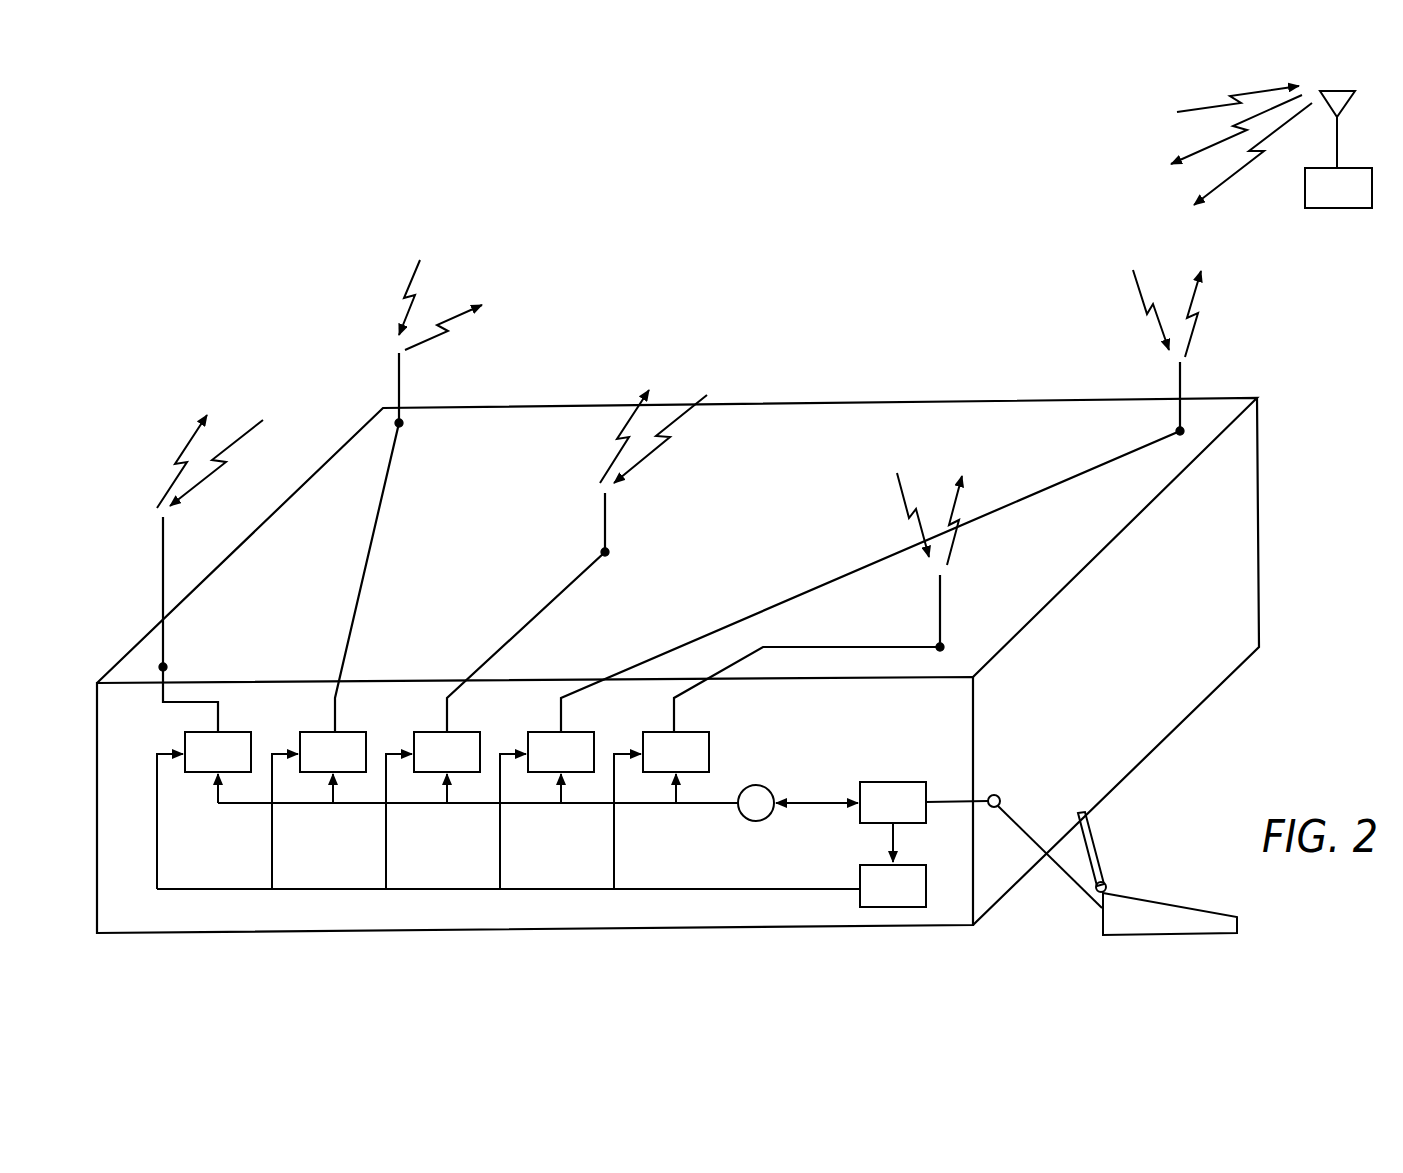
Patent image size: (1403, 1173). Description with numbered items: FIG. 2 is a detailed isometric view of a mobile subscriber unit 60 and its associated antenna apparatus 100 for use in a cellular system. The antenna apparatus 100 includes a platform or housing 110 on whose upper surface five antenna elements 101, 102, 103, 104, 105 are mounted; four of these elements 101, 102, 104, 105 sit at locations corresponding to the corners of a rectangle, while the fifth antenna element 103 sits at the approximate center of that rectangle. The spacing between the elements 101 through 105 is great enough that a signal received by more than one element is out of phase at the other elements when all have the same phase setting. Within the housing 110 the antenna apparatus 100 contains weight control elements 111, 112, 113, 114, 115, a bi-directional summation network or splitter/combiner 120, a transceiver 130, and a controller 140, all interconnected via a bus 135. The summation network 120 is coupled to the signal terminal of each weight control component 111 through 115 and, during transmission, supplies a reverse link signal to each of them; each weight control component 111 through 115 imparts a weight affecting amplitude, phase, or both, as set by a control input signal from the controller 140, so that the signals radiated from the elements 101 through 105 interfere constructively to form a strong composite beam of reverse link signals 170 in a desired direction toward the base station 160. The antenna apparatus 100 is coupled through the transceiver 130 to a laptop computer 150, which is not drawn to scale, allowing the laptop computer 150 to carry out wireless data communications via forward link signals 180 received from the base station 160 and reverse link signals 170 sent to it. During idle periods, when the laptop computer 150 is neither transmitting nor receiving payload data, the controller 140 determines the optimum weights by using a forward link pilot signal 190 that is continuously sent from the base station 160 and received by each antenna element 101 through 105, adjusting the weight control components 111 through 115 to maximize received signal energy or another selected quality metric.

The mobile subscriber unit 60 is at (1262, 502).
The antenna apparatus 100 is at (290, 372).
The antenna element 101 is at (401, 378).
The antenna element 102 is at (1182, 376).
The antenna element 103 is at (607, 518).
The antenna element 104 is at (160, 581).
The antenna element 105 is at (942, 598).
The housing 110 is at (690, 930).
The weight control element 111 is at (204, 796).
The weight control element 112 is at (319, 796).
The weight control element 113 is at (433, 796).
The weight control element 114 is at (547, 796).
The weight control element 115 is at (661, 796).
The bi-directional summation network 120 is at (768, 790).
The transceiver 130 is at (924, 822).
The bus 135 is at (638, 807).
The controller 140 is at (893, 886).
The laptop computer 150 is at (1112, 866).
The base station 160 is at (1338, 149).
The reverse link signals 170 is at (728, 325).
The forward link signals 180 is at (741, 330).
The forward link pilot signal 190 is at (1196, 145).